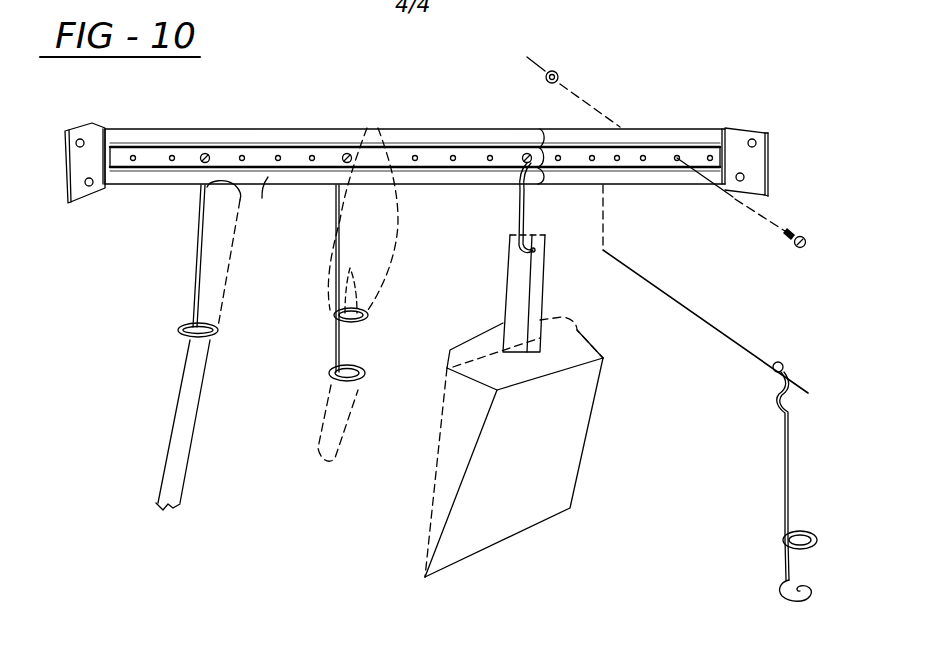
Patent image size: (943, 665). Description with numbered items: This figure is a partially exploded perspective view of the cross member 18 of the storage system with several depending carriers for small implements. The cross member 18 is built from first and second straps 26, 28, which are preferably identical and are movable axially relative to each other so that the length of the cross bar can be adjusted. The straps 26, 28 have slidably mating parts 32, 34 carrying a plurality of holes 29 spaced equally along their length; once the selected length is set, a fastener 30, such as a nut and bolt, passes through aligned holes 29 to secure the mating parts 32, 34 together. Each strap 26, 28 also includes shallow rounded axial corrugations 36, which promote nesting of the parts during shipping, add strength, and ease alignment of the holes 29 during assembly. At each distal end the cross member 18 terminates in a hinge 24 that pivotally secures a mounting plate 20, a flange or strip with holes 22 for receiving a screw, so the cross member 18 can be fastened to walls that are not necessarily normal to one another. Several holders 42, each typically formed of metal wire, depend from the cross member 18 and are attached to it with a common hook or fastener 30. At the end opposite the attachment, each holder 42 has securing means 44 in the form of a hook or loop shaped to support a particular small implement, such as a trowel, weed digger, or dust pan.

The cross member 18 is at (522, 108).
The mounting plate 20 is at (770, 170).
The hole 22 is at (80, 140).
The hinge 24 is at (106, 128).
The first strap 26 is at (265, 142).
The second strap 28 is at (675, 135).
The holes 29 is at (453, 155).
The fastener 30 is at (558, 73).
The mating part 32 is at (440, 180).
The mating part 34 is at (405, 137).
The axial corrugation 36 is at (205, 140).
The holder 42 is at (201, 218).
The securing means 44 is at (180, 332).